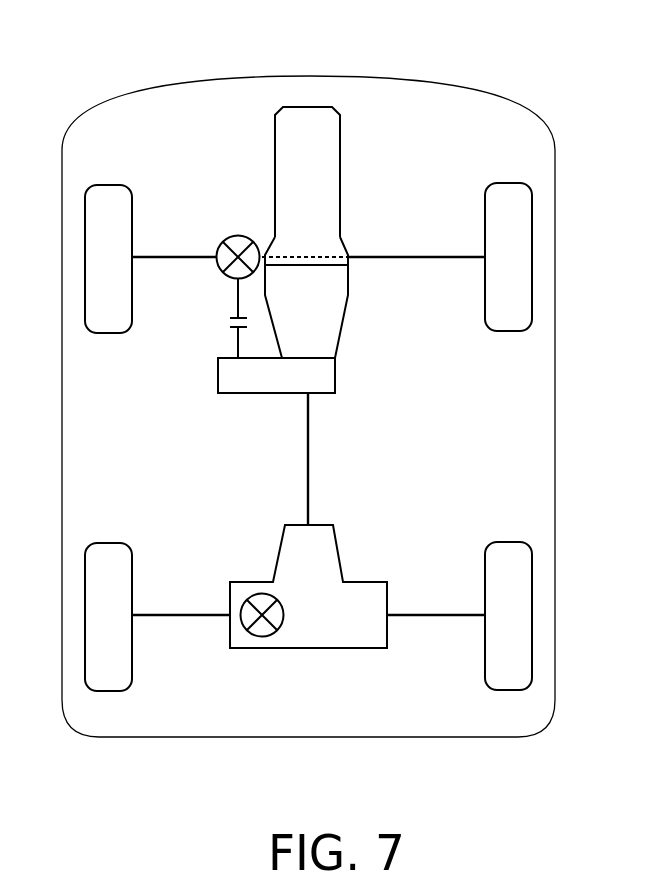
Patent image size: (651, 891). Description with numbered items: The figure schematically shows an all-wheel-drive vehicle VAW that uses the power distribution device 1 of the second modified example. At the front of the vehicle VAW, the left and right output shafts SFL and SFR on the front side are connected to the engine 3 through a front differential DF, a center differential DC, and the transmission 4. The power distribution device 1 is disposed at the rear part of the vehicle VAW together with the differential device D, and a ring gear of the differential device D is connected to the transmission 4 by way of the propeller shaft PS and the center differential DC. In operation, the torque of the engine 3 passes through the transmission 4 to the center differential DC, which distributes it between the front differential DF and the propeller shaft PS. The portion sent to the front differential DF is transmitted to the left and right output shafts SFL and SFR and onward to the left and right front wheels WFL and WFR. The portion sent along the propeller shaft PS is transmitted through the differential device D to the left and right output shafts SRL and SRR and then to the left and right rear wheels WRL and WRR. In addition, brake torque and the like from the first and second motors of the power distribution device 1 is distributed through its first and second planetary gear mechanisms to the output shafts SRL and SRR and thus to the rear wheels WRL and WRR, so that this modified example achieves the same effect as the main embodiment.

The all-wheel-drive vehicle VAW is at (305, 76).
The left front wheel WFL is at (108, 193).
The right front wheel WFR is at (510, 194).
The left rear wheel WRL is at (108, 553).
The right rear wheel WRR is at (510, 552).
The left output shaft on the front side SFL is at (170, 256).
The right output shaft on the front side SFR is at (434, 256).
The left output shaft on the rear side SRL is at (175, 614).
The right output shaft on the rear side SRR is at (434, 614).
The front differential DF is at (237, 235).
The engine 3 is at (327, 156).
The transmission 4 is at (328, 328).
The center differential DC is at (260, 378).
The propeller shaft PS is at (310, 455).
The power distribution device 1 is at (325, 546).
The differential device D is at (258, 640).